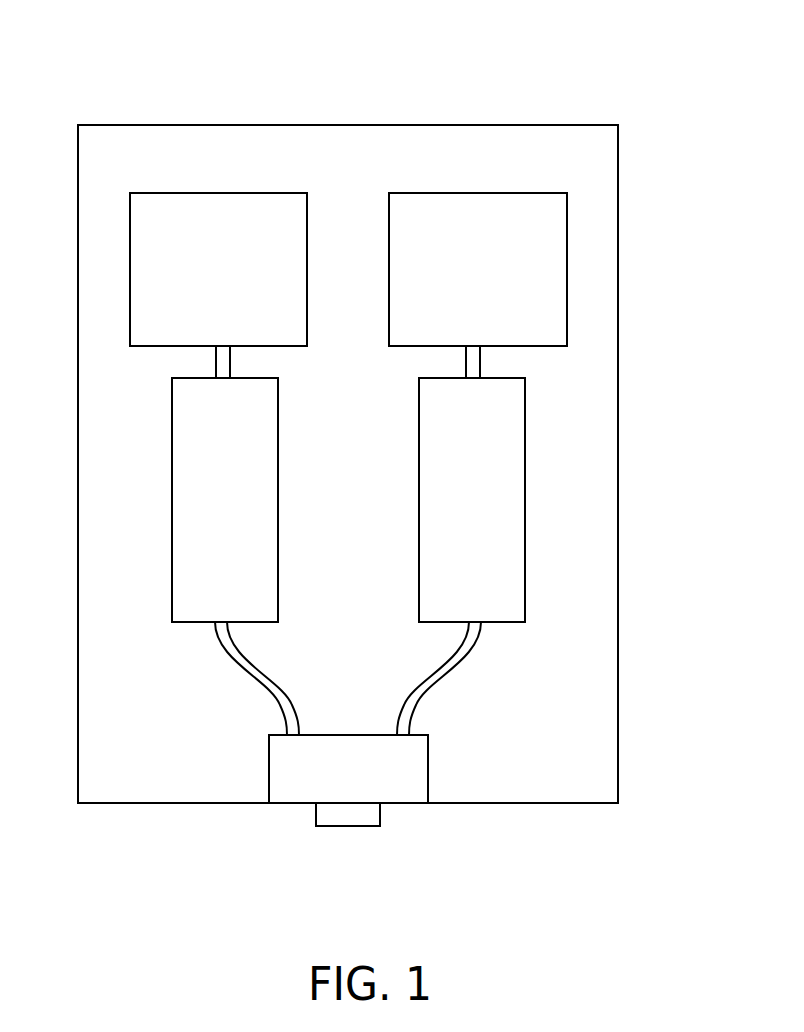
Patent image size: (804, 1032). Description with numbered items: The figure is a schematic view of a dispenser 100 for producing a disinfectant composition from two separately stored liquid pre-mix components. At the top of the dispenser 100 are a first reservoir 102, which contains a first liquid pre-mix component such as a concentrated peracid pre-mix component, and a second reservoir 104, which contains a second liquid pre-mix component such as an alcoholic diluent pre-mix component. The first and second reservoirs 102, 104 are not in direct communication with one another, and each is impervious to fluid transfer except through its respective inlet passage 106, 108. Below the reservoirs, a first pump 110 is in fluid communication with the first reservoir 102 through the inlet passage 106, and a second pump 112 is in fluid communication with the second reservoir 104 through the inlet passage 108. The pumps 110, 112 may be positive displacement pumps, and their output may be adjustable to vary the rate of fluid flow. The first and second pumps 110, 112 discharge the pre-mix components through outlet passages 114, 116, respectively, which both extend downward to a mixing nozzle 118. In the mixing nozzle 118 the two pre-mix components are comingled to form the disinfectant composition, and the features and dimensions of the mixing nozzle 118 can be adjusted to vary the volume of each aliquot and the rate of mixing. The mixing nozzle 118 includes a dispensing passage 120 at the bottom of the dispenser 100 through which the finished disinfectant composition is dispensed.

The dispenser 100 is at (642, 63).
The first reservoir 102 is at (225, 193).
The second reservoir 104 is at (484, 193).
The inlet passage 106 is at (216, 362).
The inlet passage 108 is at (480, 367).
The first pump 110 is at (172, 490).
The second pump 112 is at (526, 492).
The outlet passage 114 is at (245, 673).
The outlet passage 116 is at (453, 668).
The mixing nozzle 118 is at (428, 768).
The dispensing passage 120 is at (352, 826).